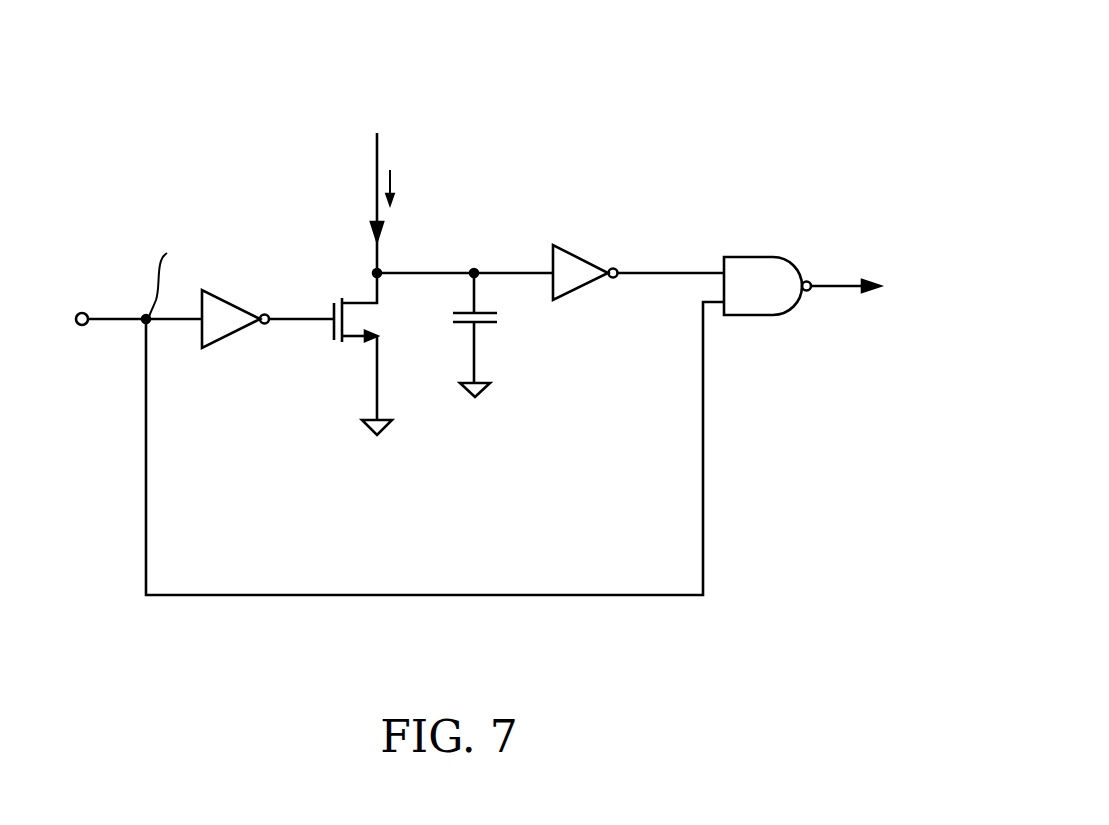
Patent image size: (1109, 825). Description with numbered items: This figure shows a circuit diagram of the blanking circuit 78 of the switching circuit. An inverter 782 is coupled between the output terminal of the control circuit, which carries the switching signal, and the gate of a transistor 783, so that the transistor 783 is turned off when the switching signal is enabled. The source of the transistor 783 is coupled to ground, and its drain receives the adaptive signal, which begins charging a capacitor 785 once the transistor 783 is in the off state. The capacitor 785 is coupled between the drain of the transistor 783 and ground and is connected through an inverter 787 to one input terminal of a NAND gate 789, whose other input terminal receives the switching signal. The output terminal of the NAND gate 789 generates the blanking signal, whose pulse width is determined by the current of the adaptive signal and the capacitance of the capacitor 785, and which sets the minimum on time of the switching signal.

The blanking circuit 78 is at (779, 66).
The inverter 782 is at (226, 293).
The transistor 783 is at (335, 342).
The capacitor 785 is at (486, 325).
The inverter 787 is at (577, 258).
The NAND gate 789 is at (773, 258).